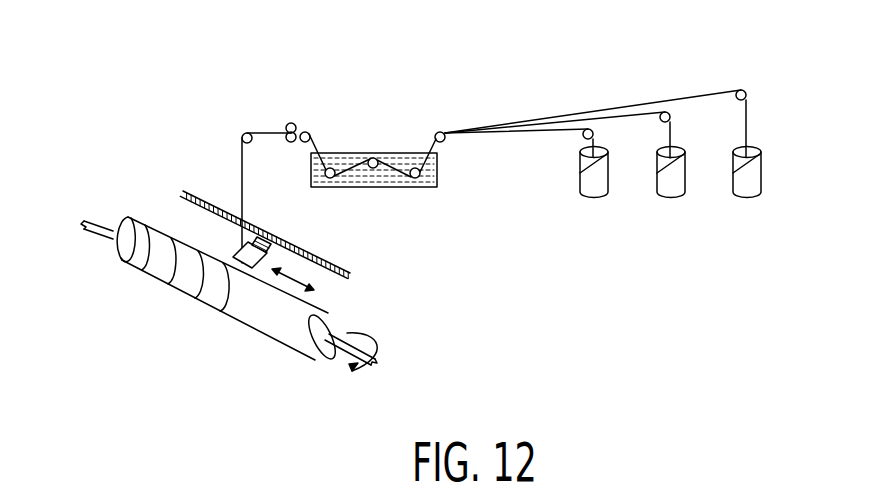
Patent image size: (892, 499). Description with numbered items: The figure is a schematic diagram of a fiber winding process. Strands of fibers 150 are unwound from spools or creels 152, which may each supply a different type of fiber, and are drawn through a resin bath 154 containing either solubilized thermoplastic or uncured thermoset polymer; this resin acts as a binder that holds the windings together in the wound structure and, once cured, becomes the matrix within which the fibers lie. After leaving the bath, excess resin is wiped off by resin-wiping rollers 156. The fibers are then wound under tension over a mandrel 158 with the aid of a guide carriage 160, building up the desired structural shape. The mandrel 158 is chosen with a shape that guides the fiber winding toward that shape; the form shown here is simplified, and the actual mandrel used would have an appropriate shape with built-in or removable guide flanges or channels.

The strands of fibers 150 is at (692, 95).
The spools or creels 152 is at (743, 207).
The resin bath 154 is at (390, 157).
The resin-wiping rollers 156 is at (288, 127).
The mandrel 158 is at (275, 318).
The guide carriage 160 is at (282, 248).